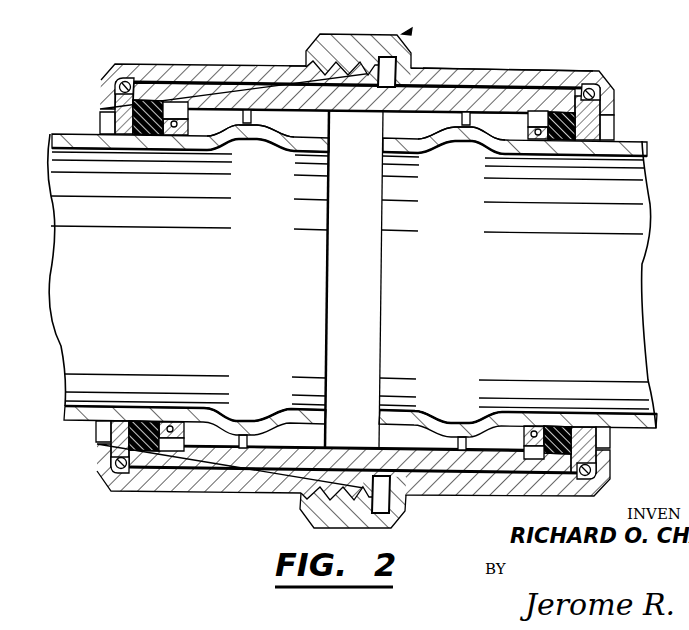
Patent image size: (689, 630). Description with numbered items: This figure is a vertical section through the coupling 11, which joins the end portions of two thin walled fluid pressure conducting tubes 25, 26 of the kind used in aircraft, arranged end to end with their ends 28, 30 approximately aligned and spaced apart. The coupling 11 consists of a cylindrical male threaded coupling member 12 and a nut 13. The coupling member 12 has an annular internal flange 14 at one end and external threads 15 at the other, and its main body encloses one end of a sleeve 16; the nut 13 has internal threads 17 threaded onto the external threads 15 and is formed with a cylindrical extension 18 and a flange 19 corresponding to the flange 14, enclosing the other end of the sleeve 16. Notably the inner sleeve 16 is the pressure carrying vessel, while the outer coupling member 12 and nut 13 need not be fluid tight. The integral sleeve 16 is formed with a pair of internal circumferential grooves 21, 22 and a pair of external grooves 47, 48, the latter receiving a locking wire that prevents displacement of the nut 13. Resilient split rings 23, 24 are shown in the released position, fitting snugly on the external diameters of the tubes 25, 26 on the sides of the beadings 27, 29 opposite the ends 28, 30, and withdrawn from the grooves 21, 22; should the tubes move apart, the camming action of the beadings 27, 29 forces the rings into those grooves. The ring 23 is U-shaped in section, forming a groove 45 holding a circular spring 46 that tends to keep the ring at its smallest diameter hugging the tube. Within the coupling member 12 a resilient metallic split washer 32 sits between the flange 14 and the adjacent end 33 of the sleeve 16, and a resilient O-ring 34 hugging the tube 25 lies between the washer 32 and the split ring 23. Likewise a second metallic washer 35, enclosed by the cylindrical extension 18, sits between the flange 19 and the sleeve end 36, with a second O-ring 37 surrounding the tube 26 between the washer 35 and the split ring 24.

The coupling 11 is at (406, 33).
The cylindrical male threaded coupling member 12 is at (153, 82).
The nut 13 is at (384, 27).
The annular internal flange 14 is at (102, 121).
The external threads 15 is at (343, 60).
The sleeve 16 is at (403, 61).
The internal threads 17 is at (305, 68).
The cylindrical extension 18 is at (464, 67).
The flange 19 is at (616, 117).
The internal circumferential groove 21 is at (222, 88).
The internal circumferential groove 22 is at (540, 112).
The resilient split ring 23 is at (152, 98).
The resilient split ring 24 is at (566, 103).
The pressure conducting tube 25 is at (123, 407).
The pressure conducting tube 26 is at (426, 415).
The beading 27 is at (248, 137).
The end 28 is at (328, 246).
The external beading 29 is at (430, 147).
The end 30 is at (381, 293).
The resilient metallic split washer 32 is at (119, 90).
The end of the sleeve 33 is at (138, 85).
The resilient O-ring 34 is at (110, 114).
The second metallic washer 35 is at (613, 104).
The end of the sleeve 36 is at (593, 111).
The second O-ring 37 is at (604, 129).
The groove 45 is at (170, 424).
The circular spring 46 is at (179, 422).
The external groove 47 is at (188, 102).
The external groove 48 is at (475, 498).